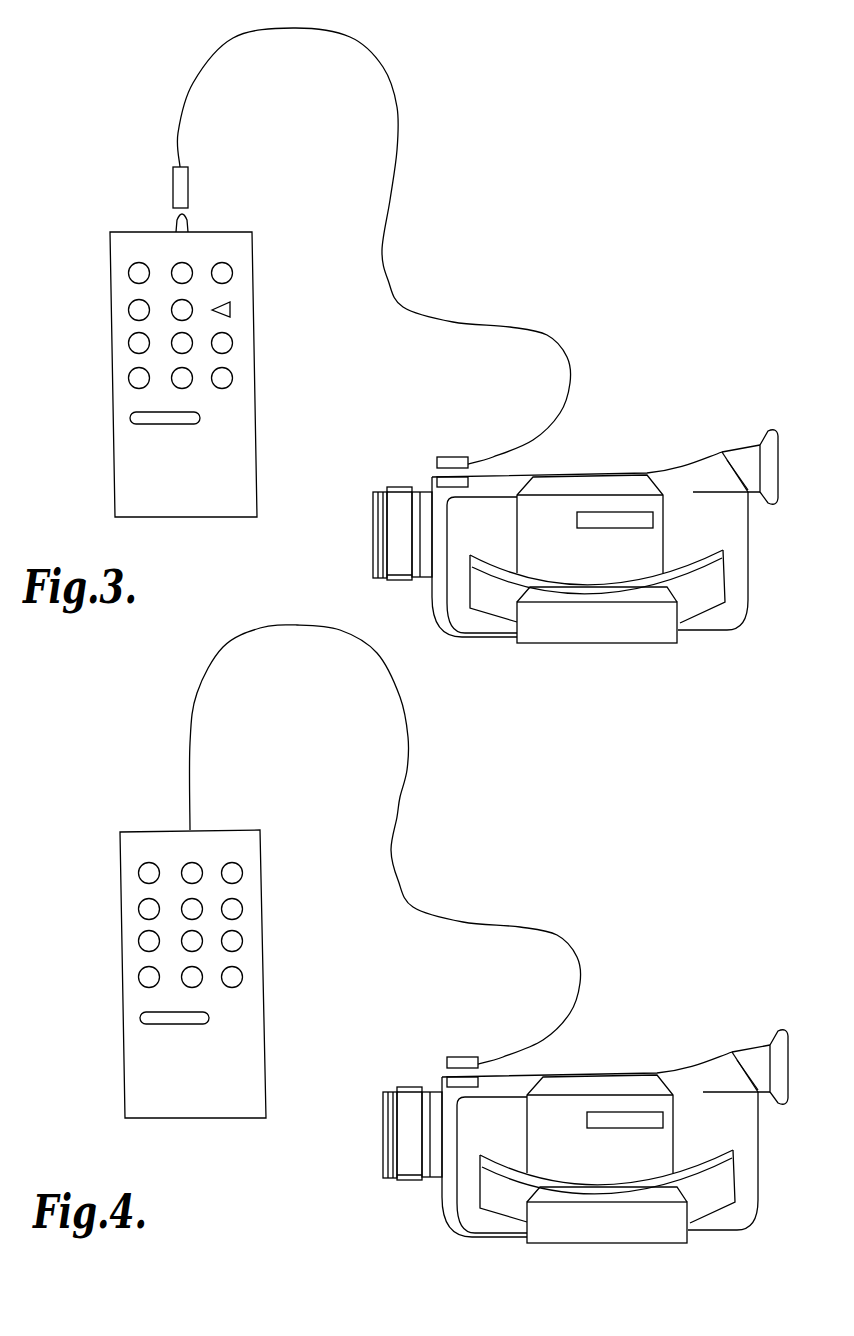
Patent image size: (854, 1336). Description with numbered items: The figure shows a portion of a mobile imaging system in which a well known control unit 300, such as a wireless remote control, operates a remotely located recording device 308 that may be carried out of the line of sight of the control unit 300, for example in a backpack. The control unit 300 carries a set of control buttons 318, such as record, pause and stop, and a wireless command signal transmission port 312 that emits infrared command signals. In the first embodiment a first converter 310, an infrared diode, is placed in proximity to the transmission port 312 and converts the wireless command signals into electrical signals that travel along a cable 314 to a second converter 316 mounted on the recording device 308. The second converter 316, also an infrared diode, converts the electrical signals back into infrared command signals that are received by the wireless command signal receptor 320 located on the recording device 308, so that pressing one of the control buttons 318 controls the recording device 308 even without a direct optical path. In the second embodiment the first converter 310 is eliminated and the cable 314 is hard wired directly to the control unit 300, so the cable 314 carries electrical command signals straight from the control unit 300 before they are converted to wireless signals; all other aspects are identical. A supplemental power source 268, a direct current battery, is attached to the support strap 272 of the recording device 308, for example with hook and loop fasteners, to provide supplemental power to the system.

In FIG. 3, the supplemental power source 268 is at (613, 637).
In FIG. 3, the support strap 272 is at (485, 595).
In FIG. 3, the control unit 300 is at (255, 390).
In FIG. 4, the control unit 300 is at (265, 983).
In FIG. 3, the recording device 308 is at (618, 473).
In FIG. 3, the first converter 310 is at (173, 188).
In FIG. 3, the wireless command signal transmission port 312 is at (185, 222).
In FIG. 3, the cable 314 is at (390, 278).
In FIG. 4, the cable 314 is at (398, 813).
In FIG. 3, the second converter 316 is at (453, 457).
In FIG. 3, the control buttons 318 is at (223, 273).
In FIG. 3, the wireless command signal receptor 320 is at (440, 482).